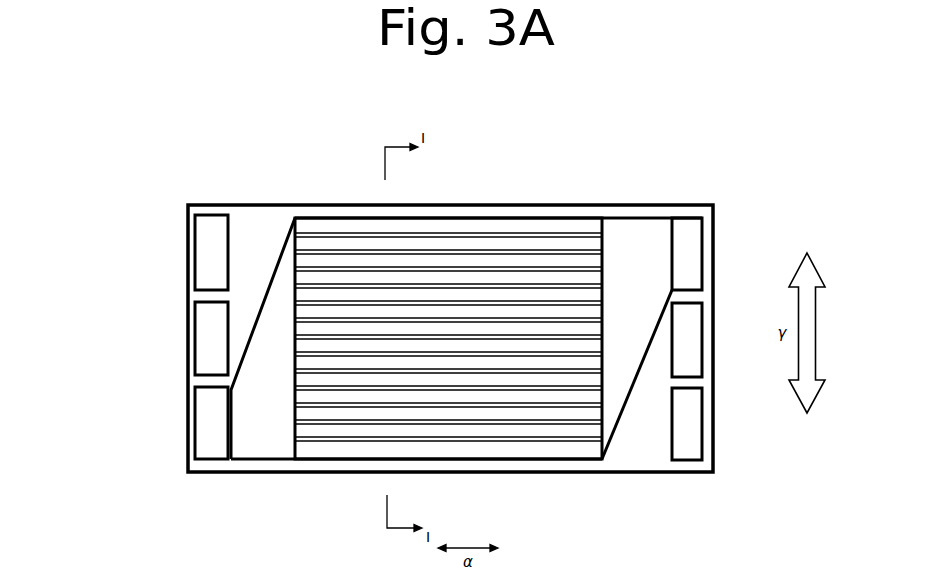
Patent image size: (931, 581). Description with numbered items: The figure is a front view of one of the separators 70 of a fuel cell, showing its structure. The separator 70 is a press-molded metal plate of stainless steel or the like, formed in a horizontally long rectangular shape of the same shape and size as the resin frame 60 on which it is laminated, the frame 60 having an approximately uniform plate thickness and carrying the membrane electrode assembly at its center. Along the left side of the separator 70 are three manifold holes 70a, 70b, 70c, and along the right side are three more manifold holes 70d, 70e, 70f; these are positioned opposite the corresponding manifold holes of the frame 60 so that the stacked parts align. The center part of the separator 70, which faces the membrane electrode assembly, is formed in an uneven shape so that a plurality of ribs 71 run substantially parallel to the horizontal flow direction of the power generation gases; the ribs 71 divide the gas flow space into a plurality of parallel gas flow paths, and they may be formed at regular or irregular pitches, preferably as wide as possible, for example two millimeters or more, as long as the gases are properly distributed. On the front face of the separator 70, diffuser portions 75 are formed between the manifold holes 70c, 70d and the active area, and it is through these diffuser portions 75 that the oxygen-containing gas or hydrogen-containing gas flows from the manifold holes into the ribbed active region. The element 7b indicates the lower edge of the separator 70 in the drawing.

The frame 60 is at (187, 473).
The separator 70 is at (245, 223).
The manifold hole 70a is at (203, 280).
The manifold hole 70b is at (203, 343).
The manifold hole 70c is at (203, 418).
The manifold hole 70d is at (692, 227).
The manifold hole 70e is at (697, 318).
The manifold hole 70f is at (695, 395).
The rib 71 is at (550, 233).
The diffuser portion 75 is at (451, 338).
The bottom edge 7b is at (527, 461).